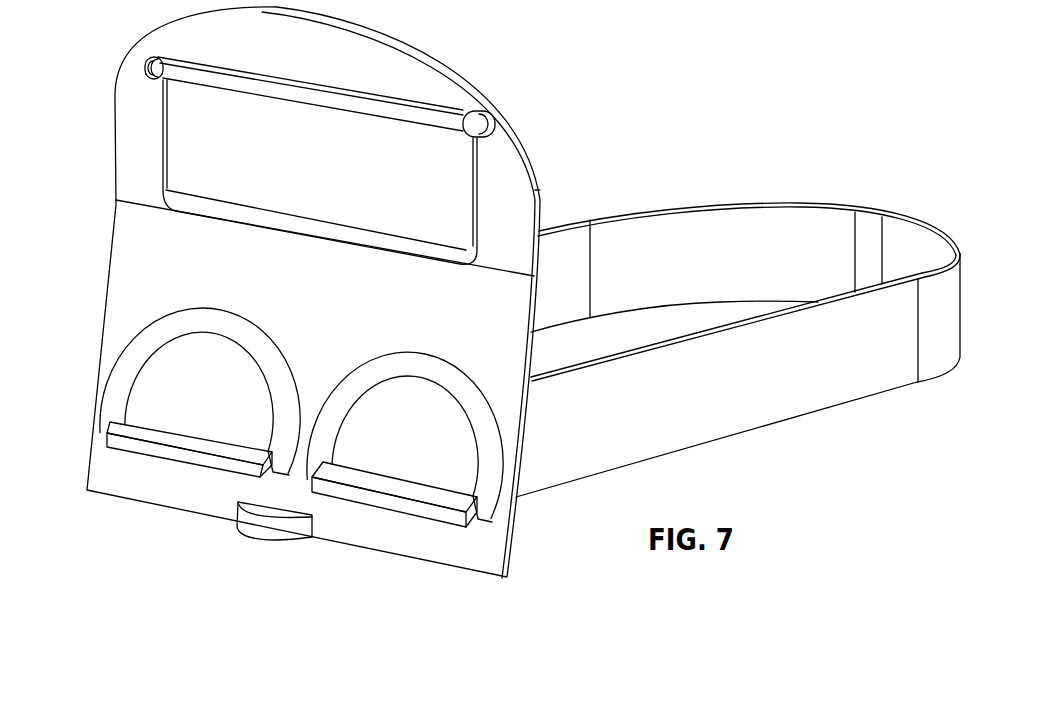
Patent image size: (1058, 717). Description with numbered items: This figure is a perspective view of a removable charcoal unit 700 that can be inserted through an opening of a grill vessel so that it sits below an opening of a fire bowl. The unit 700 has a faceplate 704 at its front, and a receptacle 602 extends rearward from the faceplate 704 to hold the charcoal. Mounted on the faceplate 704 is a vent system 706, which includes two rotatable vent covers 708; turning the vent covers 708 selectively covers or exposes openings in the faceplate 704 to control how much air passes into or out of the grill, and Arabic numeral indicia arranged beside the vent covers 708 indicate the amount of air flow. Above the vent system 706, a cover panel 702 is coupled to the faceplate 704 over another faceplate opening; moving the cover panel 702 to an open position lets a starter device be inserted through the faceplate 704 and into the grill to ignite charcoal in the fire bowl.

The removable charcoal unit 700 is at (722, 72).
The receptacle 602 is at (737, 225).
The cover panel 702 is at (180, 143).
The faceplate 704 is at (513, 158).
The vent system 706 is at (293, 328).
The vent covers 708 is at (182, 360).